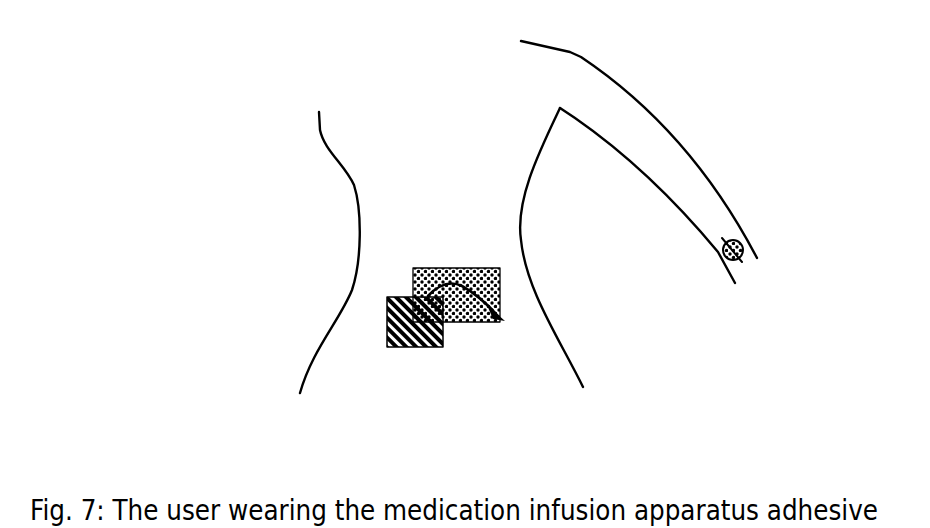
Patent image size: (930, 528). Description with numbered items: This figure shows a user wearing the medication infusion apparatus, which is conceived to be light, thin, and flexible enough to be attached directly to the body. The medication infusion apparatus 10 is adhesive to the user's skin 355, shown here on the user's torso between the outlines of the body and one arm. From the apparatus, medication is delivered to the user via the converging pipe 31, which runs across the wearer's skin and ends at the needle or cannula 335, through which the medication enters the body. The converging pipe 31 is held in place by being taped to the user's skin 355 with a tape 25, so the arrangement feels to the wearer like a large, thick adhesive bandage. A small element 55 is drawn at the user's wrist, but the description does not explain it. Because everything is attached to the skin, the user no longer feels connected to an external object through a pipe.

The medication infusion apparatus 10 is at (383, 330).
The tape 25 is at (414, 273).
The converging pipe 31 is at (481, 273).
The remote control unit 55 is at (741, 228).
The needle or cannula 335 is at (504, 318).
The user's skin 355 is at (420, 235).